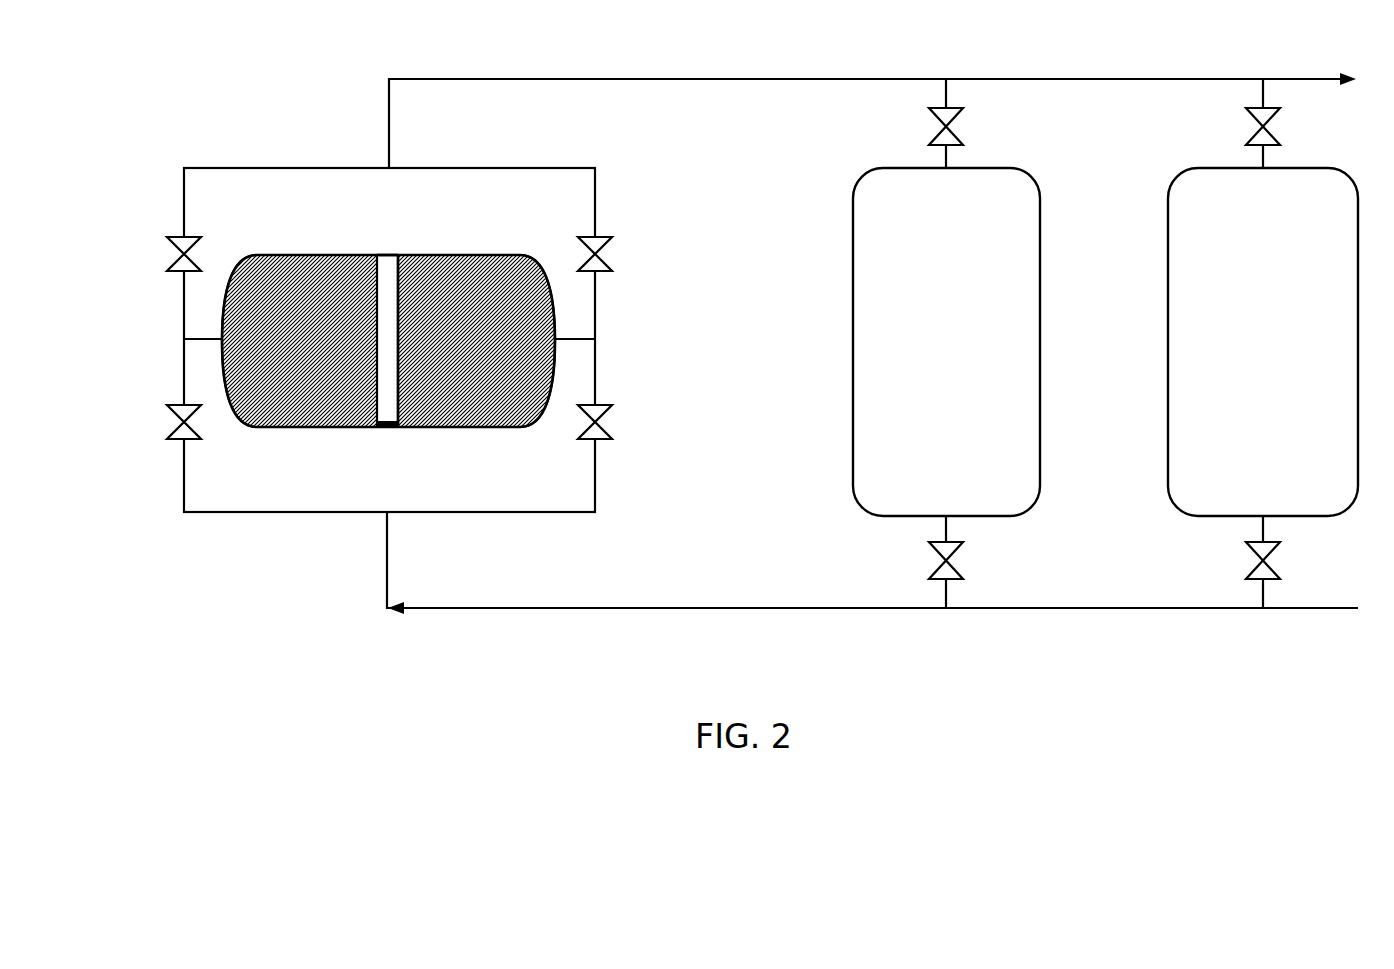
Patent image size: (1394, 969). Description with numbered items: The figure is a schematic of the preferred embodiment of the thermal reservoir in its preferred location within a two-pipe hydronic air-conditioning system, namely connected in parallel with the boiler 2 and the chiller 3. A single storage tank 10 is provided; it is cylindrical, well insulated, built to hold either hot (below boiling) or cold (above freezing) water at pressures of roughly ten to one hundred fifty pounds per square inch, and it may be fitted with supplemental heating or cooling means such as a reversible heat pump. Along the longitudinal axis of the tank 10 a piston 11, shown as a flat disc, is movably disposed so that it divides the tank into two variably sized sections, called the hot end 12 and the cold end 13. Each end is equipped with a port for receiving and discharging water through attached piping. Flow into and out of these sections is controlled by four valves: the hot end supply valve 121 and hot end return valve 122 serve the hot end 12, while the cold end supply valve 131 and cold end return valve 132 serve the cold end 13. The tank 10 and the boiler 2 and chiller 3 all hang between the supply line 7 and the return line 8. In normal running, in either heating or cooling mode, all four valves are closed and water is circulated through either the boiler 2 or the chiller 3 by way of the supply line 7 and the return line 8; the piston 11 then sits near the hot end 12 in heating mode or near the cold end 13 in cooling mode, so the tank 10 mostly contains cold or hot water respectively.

The boiler 2 is at (941, 389).
The chiller 3 is at (1266, 389).
The supply line 7 is at (598, 78).
The return line 8 is at (619, 609).
The storage tank 10 is at (487, 428).
The piston 11 is at (383, 383).
The hot end 12 is at (272, 340).
The cold end 13 is at (481, 333).
The hot end supply valve 121 is at (169, 253).
The hot end return valve 122 is at (169, 423).
The cold end supply valve 131 is at (609, 253).
The cold end return valve 132 is at (611, 424).